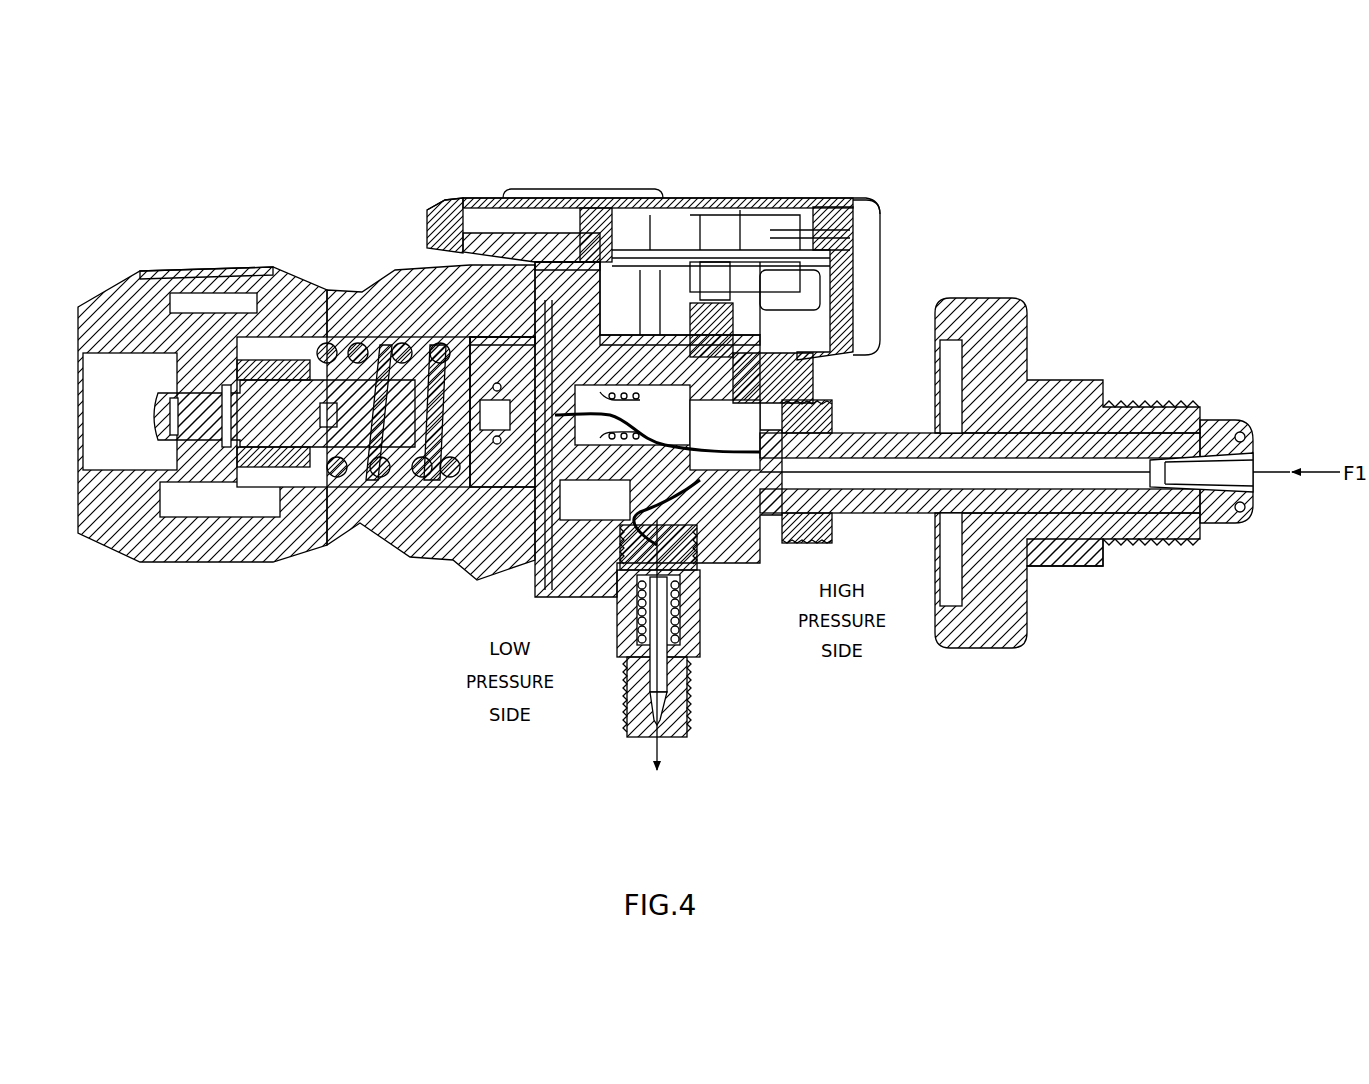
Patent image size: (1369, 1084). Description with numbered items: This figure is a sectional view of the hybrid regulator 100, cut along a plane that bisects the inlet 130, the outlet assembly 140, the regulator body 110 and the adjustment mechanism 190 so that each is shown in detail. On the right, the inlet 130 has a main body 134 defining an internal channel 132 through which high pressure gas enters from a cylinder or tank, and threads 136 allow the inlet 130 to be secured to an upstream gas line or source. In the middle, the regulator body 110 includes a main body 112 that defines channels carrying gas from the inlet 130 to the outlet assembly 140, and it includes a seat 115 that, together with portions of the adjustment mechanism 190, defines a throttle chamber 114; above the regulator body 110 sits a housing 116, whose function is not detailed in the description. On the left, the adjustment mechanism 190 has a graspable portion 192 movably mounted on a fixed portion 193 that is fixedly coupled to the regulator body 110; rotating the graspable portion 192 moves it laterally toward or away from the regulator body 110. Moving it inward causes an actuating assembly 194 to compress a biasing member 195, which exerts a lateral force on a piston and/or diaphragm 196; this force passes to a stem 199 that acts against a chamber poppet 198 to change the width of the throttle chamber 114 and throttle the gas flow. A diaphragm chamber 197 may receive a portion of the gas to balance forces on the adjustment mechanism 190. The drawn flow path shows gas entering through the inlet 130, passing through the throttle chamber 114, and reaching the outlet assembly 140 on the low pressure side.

The hybrid regulator 100 is at (918, 190).
The regulator body 110 is at (627, 330).
The main body 112 is at (582, 330).
The throttle chamber 114 is at (545, 310).
The seat 115 is at (593, 515).
The electronics housing 116 is at (786, 199).
The inlet 130 is at (1092, 384).
The internal channel 132 is at (1122, 462).
The main body 134 is at (1042, 570).
The threads 136 is at (1166, 544).
The outlet assembly 140 is at (703, 664).
The adjustment mechanism 190 is at (207, 268).
The graspable portion 192 is at (105, 300).
The fixed portion 193 is at (365, 527).
The actuating assembly 194 is at (262, 447).
The biasing member 195 is at (322, 346).
The piston and/or diaphragm 196 is at (455, 422).
The diaphragm chamber 197 is at (545, 257).
The chamber poppet 198 is at (715, 290).
The stem 199 is at (478, 472).